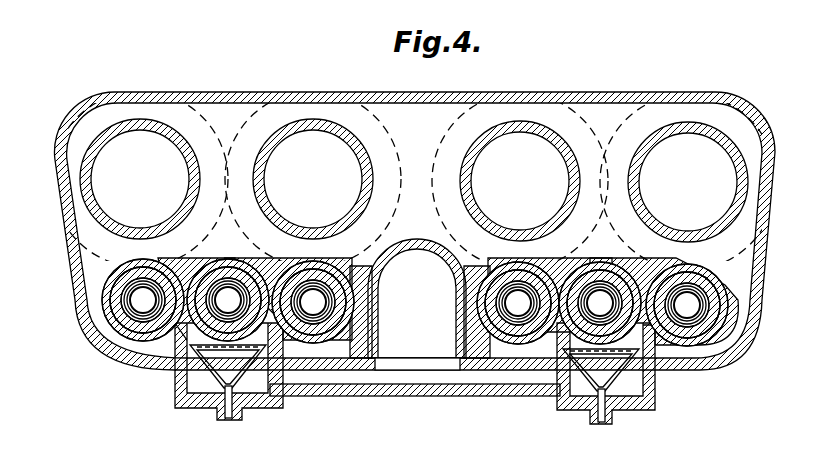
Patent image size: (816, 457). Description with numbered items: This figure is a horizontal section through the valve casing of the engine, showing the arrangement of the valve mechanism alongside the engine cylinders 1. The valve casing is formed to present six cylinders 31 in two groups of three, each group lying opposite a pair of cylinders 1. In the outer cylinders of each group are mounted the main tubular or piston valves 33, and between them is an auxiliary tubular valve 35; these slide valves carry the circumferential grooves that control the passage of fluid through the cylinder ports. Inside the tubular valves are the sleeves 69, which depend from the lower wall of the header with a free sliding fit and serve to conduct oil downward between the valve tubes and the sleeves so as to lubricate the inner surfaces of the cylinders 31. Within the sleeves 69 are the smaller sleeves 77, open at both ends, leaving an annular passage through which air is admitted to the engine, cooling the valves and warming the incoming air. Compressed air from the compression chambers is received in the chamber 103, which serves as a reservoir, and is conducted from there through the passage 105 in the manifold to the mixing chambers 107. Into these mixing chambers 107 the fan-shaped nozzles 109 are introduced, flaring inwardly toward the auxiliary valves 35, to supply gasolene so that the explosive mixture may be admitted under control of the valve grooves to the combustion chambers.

The cylinder 1 is at (242, 92).
The valve cylinders 31 is at (255, 266).
The main tubular valve 33 is at (117, 301).
The auxiliary tubular valve 35 is at (228, 262).
The sleeves 69 is at (160, 262).
The sleeves 77 is at (122, 262).
The chamber 103 is at (417, 298).
The passage 105 is at (398, 383).
The mixing chambers 107 is at (263, 387).
The nozzles 109 is at (211, 367).